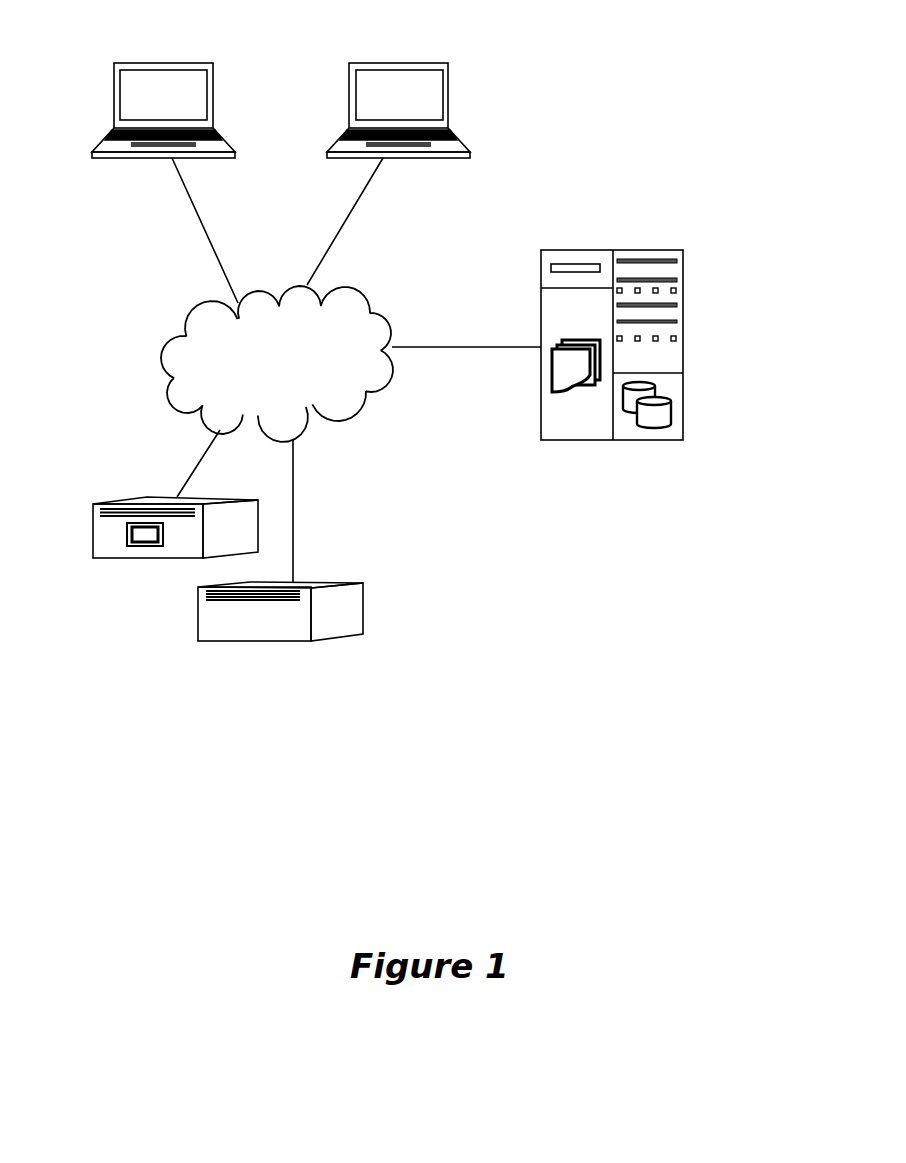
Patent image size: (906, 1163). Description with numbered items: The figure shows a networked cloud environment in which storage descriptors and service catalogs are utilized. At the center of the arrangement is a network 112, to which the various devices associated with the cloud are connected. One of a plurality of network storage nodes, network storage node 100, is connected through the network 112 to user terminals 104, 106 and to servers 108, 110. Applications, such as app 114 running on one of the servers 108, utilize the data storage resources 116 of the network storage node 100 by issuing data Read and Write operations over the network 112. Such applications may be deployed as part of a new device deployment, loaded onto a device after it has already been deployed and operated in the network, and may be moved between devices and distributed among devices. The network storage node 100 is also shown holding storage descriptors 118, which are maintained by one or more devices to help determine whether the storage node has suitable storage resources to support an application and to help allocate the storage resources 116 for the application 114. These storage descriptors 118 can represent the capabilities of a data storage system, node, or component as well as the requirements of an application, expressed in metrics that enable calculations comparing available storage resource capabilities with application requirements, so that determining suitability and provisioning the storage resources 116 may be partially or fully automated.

The network storage node 100 is at (685, 267).
The user terminal 104 is at (172, 63).
The user terminal 106 is at (398, 63).
The server 108 is at (91, 540).
The server 110 is at (198, 617).
The network 112 is at (297, 369).
The app 114 is at (141, 545).
The data storage resources 116 is at (682, 420).
The storage descriptors 118 is at (564, 370).